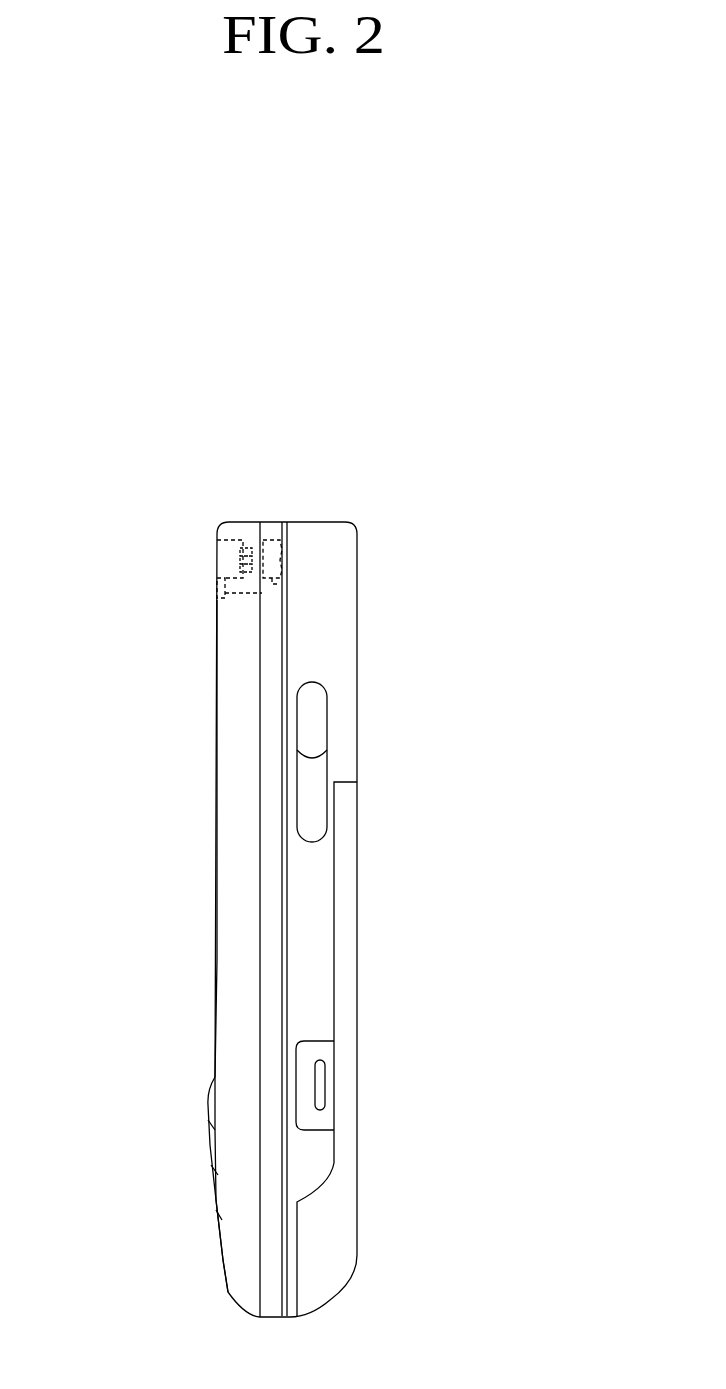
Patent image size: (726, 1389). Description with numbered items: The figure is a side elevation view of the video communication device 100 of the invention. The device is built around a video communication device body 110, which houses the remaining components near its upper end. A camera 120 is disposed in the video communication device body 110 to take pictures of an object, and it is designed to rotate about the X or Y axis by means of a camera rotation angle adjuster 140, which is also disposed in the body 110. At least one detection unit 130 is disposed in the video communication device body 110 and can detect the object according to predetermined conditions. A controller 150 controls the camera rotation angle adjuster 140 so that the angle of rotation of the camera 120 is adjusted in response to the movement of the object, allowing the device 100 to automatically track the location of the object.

The video communication device 100 is at (455, 432).
The video communication device body 110 is at (237, 960).
The camera 120 is at (230, 545).
The detection unit 130 is at (217, 597).
The camera rotation angle adjuster 140 is at (243, 548).
The controller 150 is at (272, 542).